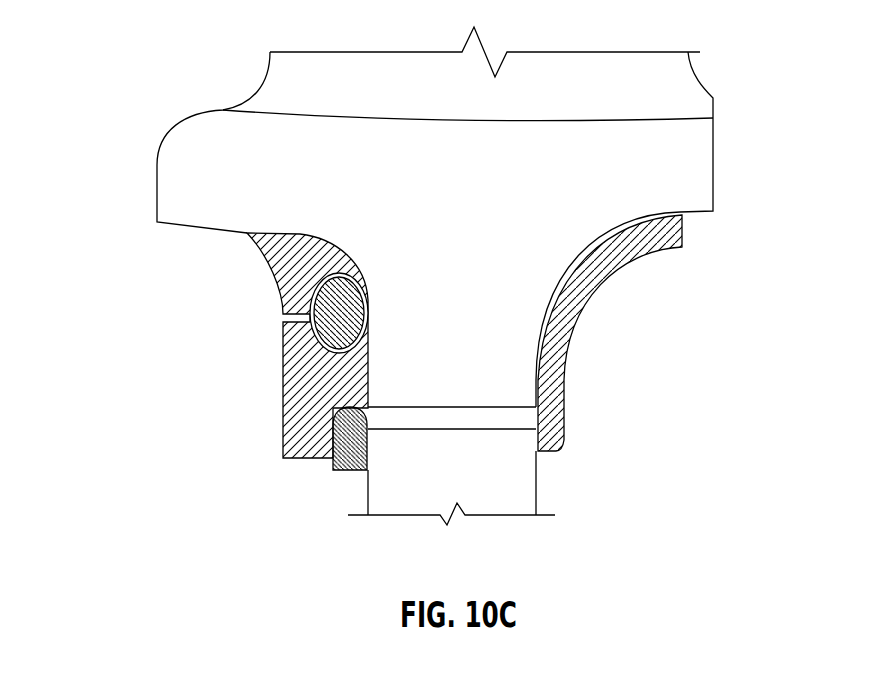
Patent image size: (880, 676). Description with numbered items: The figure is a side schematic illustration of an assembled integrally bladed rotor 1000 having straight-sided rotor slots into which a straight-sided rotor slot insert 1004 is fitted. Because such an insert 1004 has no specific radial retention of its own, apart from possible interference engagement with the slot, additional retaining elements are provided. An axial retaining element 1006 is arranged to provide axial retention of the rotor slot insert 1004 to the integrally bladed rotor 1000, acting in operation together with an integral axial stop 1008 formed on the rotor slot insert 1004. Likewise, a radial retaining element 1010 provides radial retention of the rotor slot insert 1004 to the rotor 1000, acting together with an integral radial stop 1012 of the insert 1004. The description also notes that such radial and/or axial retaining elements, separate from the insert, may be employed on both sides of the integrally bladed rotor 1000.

The integrally bladed rotor 1000 is at (136, 86).
The straight-sided rotor slot insert 1004 is at (300, 402).
The axial retaining element 1006 is at (350, 470).
The integral axial stop 1008 is at (552, 440).
The radial retaining element 1010 is at (318, 296).
The integral radial stop 1012 is at (663, 232).